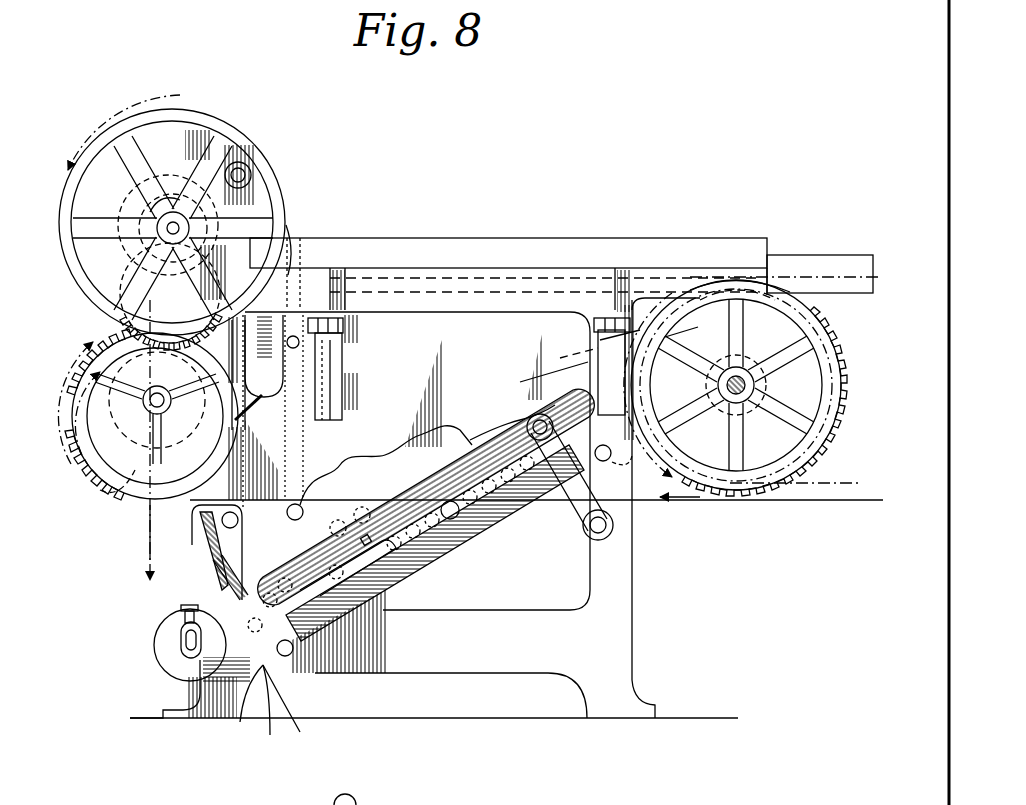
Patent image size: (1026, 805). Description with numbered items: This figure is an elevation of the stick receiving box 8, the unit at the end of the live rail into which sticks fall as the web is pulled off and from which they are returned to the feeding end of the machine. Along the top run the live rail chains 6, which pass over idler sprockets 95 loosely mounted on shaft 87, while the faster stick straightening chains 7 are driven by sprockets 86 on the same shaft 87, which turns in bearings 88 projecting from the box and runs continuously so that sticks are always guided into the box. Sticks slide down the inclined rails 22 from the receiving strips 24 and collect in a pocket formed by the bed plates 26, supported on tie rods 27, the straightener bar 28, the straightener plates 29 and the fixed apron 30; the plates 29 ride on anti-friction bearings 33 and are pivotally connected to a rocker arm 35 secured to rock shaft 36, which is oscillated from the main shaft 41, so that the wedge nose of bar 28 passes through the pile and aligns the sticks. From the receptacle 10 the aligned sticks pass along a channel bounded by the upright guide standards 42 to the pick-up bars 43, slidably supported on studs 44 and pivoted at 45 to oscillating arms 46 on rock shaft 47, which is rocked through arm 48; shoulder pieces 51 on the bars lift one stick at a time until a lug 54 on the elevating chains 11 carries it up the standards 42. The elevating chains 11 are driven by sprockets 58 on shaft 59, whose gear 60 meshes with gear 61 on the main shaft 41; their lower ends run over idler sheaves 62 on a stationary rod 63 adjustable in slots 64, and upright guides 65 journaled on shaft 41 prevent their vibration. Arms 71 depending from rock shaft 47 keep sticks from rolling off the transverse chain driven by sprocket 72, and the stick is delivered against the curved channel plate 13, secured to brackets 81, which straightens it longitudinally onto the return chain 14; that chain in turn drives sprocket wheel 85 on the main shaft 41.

The live rail chains 6 is at (847, 277).
The stick straightening chains 7 is at (822, 275).
The stick receiving box 8 is at (417, 461).
The receptacle 10 is at (506, 493).
The elevating chains 11 is at (148, 551).
The curve guide 13 is at (513, 238).
The return chain 14 is at (680, 502).
The inclined rails 22 is at (452, 518).
The receiving strips 24 is at (570, 355).
The bed plates 26 is at (318, 633).
The tie rods 27 is at (612, 458).
The straightener bar 28 is at (401, 518).
The straightener plates 29 is at (426, 497).
The fixed apron 30 is at (303, 382).
The anti-friction bearings 33 is at (335, 580).
The rocker arm 35 is at (570, 513).
The rock shaft 36 is at (590, 530).
The main shaft 41 is at (130, 440).
The upright guide standards 42 is at (258, 433).
The pick-up bars 43 is at (273, 673).
The studs 44 is at (240, 665).
The pivotal connection 45 is at (165, 195).
The oscillating arms 46 is at (176, 195).
The rock shaft 47 is at (250, 172).
The arm 48 is at (212, 573).
The shoulder pieces 51 is at (288, 656).
The lugs 54 is at (147, 530).
The sprockets 58 is at (148, 200).
The shaft 59 is at (160, 234).
The gear 60 is at (250, 135).
The gear 61 is at (127, 342).
The idler sheaves 62 is at (155, 650).
The stationary rod 63 is at (183, 640).
The slots 64 is at (183, 655).
The upright guides 65 is at (226, 530).
The arms 71 is at (298, 222).
The sprocket 72 is at (245, 320).
The brackets 81 is at (340, 348).
The sprocket wheel 85 is at (105, 487).
The sprockets 86 is at (718, 290).
The shaft 87 is at (740, 378).
The bearings 88 is at (763, 398).
The idler sprockets 95 is at (725, 283).